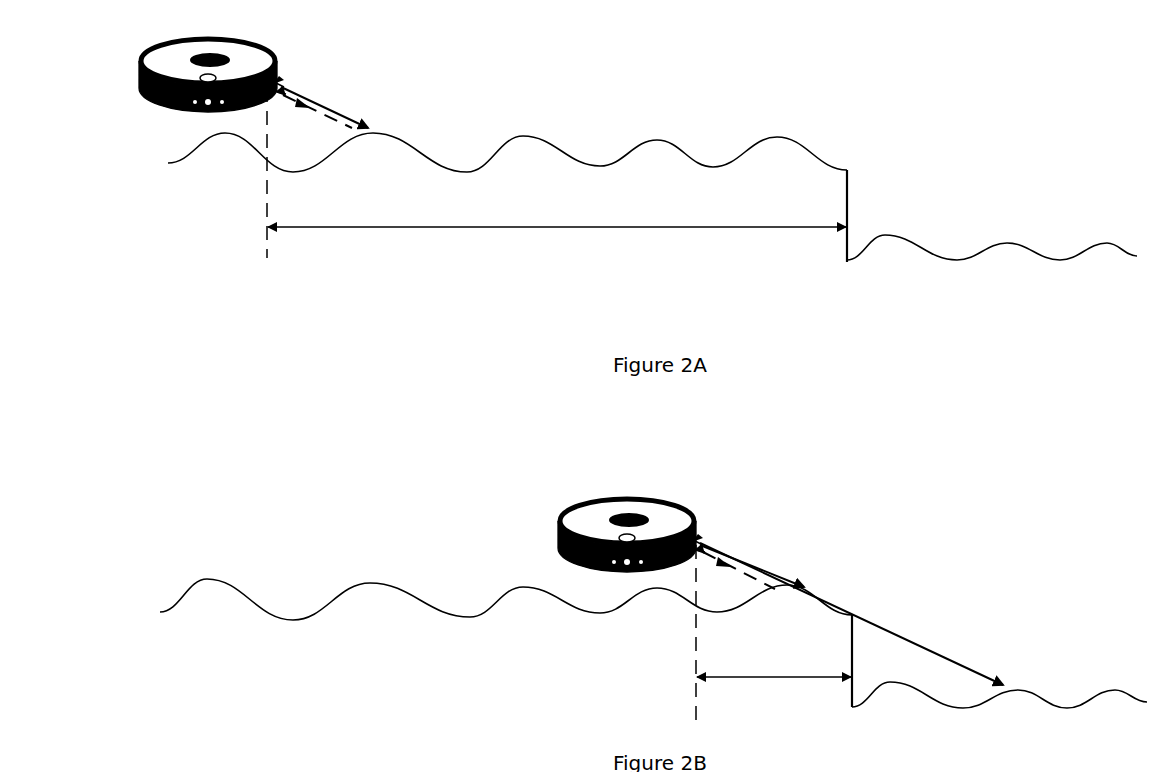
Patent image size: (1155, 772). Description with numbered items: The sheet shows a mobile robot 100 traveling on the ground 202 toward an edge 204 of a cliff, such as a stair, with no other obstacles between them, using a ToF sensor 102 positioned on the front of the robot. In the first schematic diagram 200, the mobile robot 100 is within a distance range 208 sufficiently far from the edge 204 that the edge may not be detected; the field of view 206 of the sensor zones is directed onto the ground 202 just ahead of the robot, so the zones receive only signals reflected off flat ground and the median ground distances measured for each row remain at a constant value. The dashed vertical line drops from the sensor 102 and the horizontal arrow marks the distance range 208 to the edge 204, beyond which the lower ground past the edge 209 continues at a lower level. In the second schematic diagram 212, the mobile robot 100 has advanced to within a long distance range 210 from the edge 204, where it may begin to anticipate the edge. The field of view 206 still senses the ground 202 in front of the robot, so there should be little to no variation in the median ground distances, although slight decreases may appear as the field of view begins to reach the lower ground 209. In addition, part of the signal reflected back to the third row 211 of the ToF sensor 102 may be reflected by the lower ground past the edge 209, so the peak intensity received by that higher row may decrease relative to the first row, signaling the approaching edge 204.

In FIG. 2A, the mobile robot 100 is at (140, 87).
In FIG. 2B, the mobile robot 100 is at (560, 545).
In FIG. 2A, the ToF sensor 102 is at (274, 82).
In FIG. 2B, the ToF sensor 102 is at (696, 540).
In FIG. 2A, the first schematic diagram 200 is at (98, 107).
In FIG. 2A, the ground 202 is at (468, 172).
In FIG. 2B, the ground 202 is at (470, 617).
In FIG. 2A, the edge 204 is at (847, 170).
In FIG. 2B, the edge 204 is at (852, 615).
In FIG. 2A, the field of view 206 is at (312, 103).
In FIG. 2B, the field of view 206 is at (777, 556).
In FIG. 2A, the distance range 208 is at (592, 228).
In FIG. 2A, the lower ground past the edge 209 is at (965, 260).
In FIG. 2B, the lower ground past the edge 209 is at (962, 710).
In FIG. 2B, the long distance range 210 is at (797, 678).
In FIG. 2B, the signal reflected back to the third row 211 is at (885, 625).
In FIG. 2B, the second schematic diagram 212 is at (143, 611).